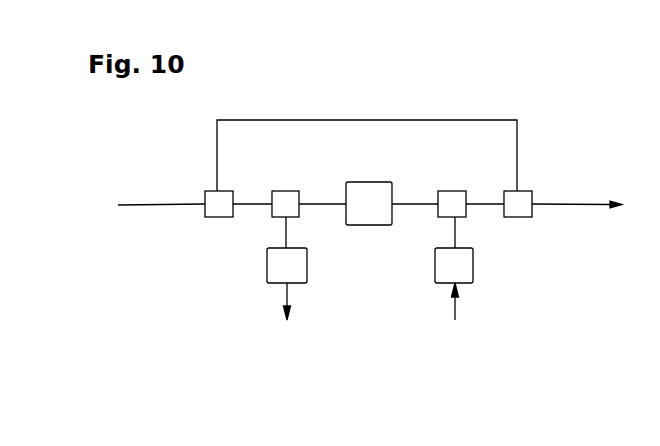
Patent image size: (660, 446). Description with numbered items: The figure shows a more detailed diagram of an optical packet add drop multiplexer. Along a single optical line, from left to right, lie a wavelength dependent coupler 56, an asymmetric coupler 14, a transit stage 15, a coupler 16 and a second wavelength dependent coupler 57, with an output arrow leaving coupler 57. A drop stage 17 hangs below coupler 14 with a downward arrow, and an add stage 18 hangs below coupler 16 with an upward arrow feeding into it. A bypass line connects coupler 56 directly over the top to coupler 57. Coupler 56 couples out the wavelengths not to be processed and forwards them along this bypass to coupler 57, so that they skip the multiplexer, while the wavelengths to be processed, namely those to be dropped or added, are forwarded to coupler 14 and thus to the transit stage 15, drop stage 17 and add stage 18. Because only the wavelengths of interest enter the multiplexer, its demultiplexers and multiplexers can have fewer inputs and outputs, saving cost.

The asymmetric coupler 14 is at (287, 190).
The transit stage 15 is at (373, 198).
The coupler 16 is at (452, 191).
The drop stage 17 is at (296, 266).
The add stage 18 is at (443, 270).
The wavelength dependent coupler 56 is at (208, 217).
The wavelength dependent coupler 57 is at (518, 217).